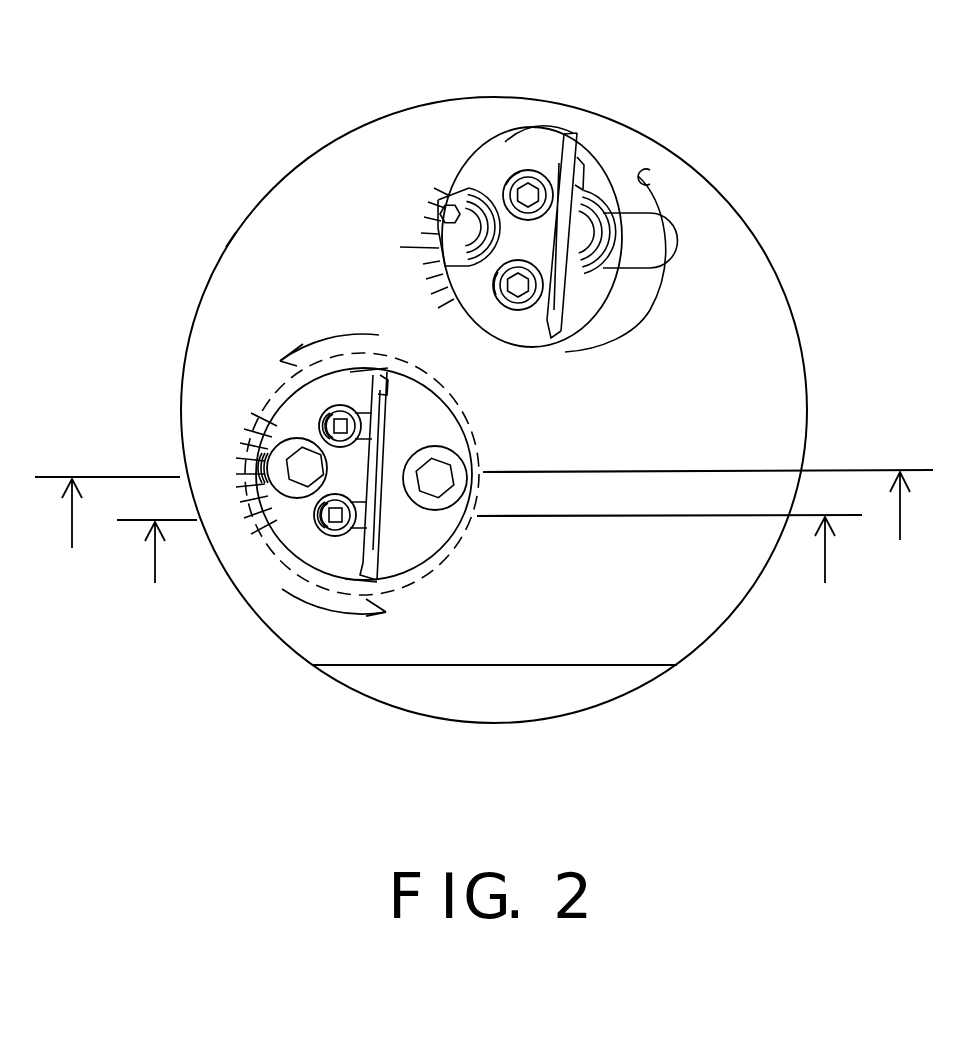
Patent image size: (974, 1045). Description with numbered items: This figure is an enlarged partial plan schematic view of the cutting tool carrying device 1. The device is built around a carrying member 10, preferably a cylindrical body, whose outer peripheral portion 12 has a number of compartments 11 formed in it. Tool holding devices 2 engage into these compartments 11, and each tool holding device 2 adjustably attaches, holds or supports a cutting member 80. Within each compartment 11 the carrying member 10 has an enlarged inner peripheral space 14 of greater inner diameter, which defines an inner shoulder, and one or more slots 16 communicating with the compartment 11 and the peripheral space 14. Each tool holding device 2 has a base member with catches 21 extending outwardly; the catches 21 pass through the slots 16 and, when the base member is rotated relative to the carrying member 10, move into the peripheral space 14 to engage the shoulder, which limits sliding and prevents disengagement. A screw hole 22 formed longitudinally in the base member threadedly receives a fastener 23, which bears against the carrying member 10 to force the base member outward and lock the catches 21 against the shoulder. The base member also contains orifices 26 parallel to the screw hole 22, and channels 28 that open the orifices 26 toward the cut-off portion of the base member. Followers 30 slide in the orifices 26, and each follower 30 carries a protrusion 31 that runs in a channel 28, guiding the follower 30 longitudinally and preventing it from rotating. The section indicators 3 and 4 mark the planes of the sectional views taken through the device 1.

The cutting tool carrying device 1 is at (820, 190).
The tool holding devices 2 is at (403, 367).
The section line 3- 3 is at (482, 522).
The section line 4- 4 is at (487, 561).
The carrying member 10 is at (785, 343).
The compartments 11 is at (650, 183).
The outer peripheral portion 12 is at (232, 246).
The inner peripheral space 14 is at (275, 393).
The slots 16 is at (283, 562).
The catches 21 is at (473, 520).
The screw hole 22 is at (270, 456).
The fastener 23 is at (283, 496).
The orifices 26 is at (510, 175).
The channels 28 is at (584, 228).
The followers 30 is at (324, 527).
The protrusion 31 is at (361, 523).
The cutting member 80 is at (358, 523).